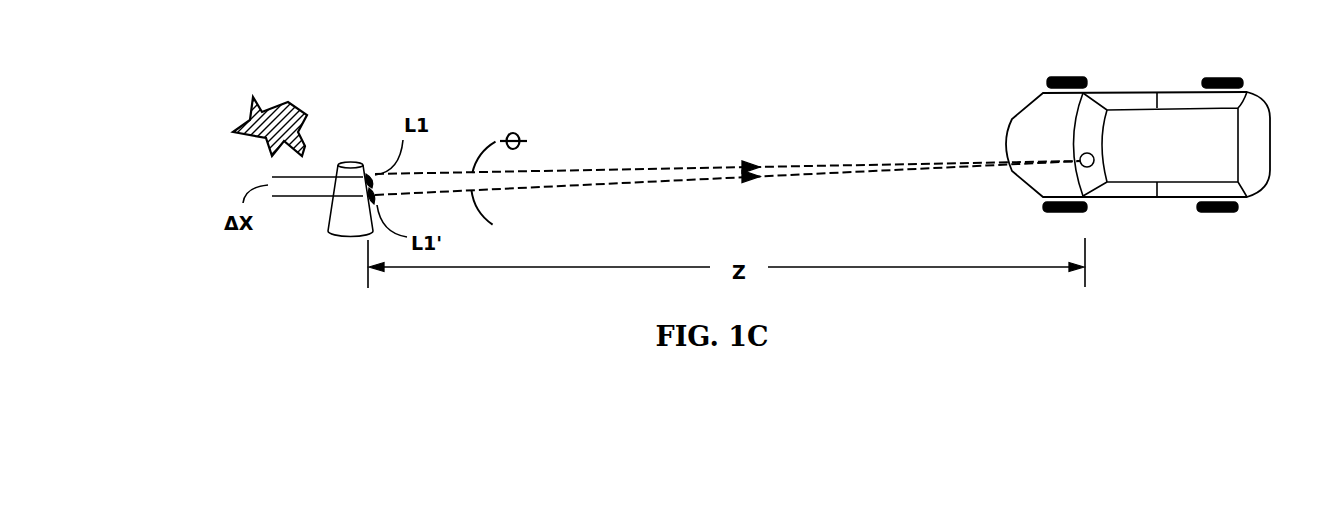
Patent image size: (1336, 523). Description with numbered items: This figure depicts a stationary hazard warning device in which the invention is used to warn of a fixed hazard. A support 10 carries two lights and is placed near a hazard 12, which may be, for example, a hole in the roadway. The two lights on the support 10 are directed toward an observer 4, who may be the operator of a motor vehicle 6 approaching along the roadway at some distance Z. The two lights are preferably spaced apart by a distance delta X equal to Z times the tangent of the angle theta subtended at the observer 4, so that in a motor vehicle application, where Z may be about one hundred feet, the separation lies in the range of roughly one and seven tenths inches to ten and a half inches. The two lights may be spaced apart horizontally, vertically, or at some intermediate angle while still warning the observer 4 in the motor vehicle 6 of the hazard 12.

The hazard 12 is at (227, 120).
The support 10 is at (342, 152).
The motor vehicle 6 is at (1162, 53).
The observer 4 is at (1105, 157).